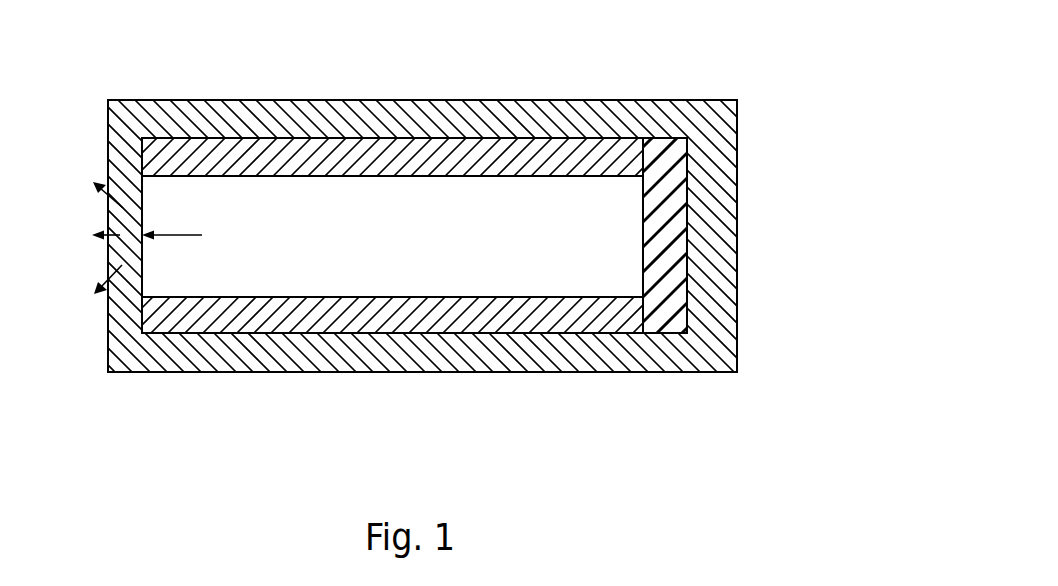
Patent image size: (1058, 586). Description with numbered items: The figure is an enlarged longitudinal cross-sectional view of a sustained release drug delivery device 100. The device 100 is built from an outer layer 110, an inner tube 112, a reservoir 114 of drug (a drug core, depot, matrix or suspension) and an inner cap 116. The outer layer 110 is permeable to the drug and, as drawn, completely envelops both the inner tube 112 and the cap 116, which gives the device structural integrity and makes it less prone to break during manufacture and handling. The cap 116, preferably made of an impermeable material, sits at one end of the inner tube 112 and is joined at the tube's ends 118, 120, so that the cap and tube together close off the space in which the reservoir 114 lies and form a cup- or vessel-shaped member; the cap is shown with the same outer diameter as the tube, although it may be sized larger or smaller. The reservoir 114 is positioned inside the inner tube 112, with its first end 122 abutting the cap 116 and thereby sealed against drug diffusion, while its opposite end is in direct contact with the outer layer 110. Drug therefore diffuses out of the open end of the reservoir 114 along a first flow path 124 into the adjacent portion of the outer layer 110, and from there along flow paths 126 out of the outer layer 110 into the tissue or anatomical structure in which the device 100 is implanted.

The drug delivery device 100 is at (515, 192).
The outer layer 110 is at (520, 123).
The inner tube 112 is at (337, 153).
The reservoir 114 is at (238, 197).
The inner cap 116 is at (663, 215).
The end of inner tube 118 is at (647, 151).
The end of inner tube 120 is at (643, 317).
The first end of reservoir 122 is at (650, 272).
The first flow path 124 is at (170, 235).
The flow paths 126 is at (107, 198).